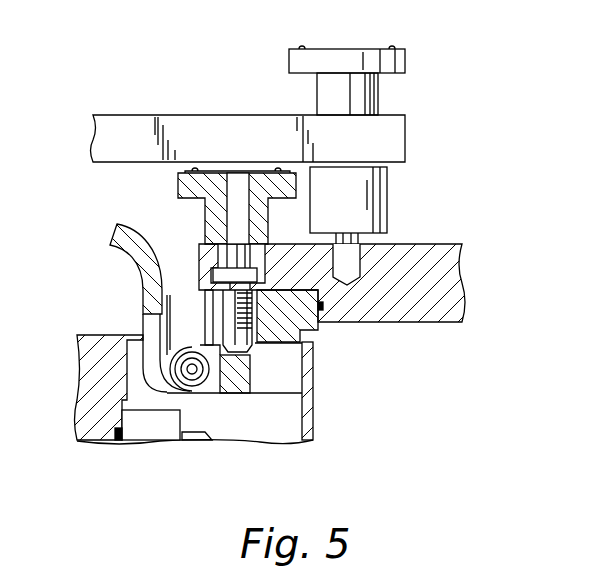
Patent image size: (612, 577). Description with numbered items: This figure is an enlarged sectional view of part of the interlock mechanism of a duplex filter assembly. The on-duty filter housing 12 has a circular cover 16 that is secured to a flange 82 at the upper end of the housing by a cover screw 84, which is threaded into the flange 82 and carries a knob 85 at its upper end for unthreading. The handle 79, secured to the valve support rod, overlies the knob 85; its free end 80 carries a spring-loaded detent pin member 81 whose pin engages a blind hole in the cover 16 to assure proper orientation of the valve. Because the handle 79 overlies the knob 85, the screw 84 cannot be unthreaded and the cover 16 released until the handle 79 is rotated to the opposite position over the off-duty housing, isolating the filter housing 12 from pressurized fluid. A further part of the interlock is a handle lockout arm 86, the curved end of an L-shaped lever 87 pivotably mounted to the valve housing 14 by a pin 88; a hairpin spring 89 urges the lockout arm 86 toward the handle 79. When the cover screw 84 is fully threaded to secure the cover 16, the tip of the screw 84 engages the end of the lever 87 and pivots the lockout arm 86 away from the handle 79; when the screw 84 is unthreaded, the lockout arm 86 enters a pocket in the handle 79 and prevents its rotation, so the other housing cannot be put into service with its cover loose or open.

The on-duty filter housing 12 is at (313, 405).
The valve housing 14 is at (82, 408).
The cover 16 is at (440, 255).
The handle 79 is at (123, 115).
The free end 80 is at (405, 140).
The spring-loaded detent pin member 81 is at (378, 96).
The flange 82 is at (318, 333).
The cover screw 84 is at (258, 300).
The knob 85 is at (192, 182).
The handle lockout arm 86 is at (118, 253).
The L-shaped lever 87 is at (140, 310).
The pin 88 is at (192, 372).
The hairpin spring 89 is at (177, 293).